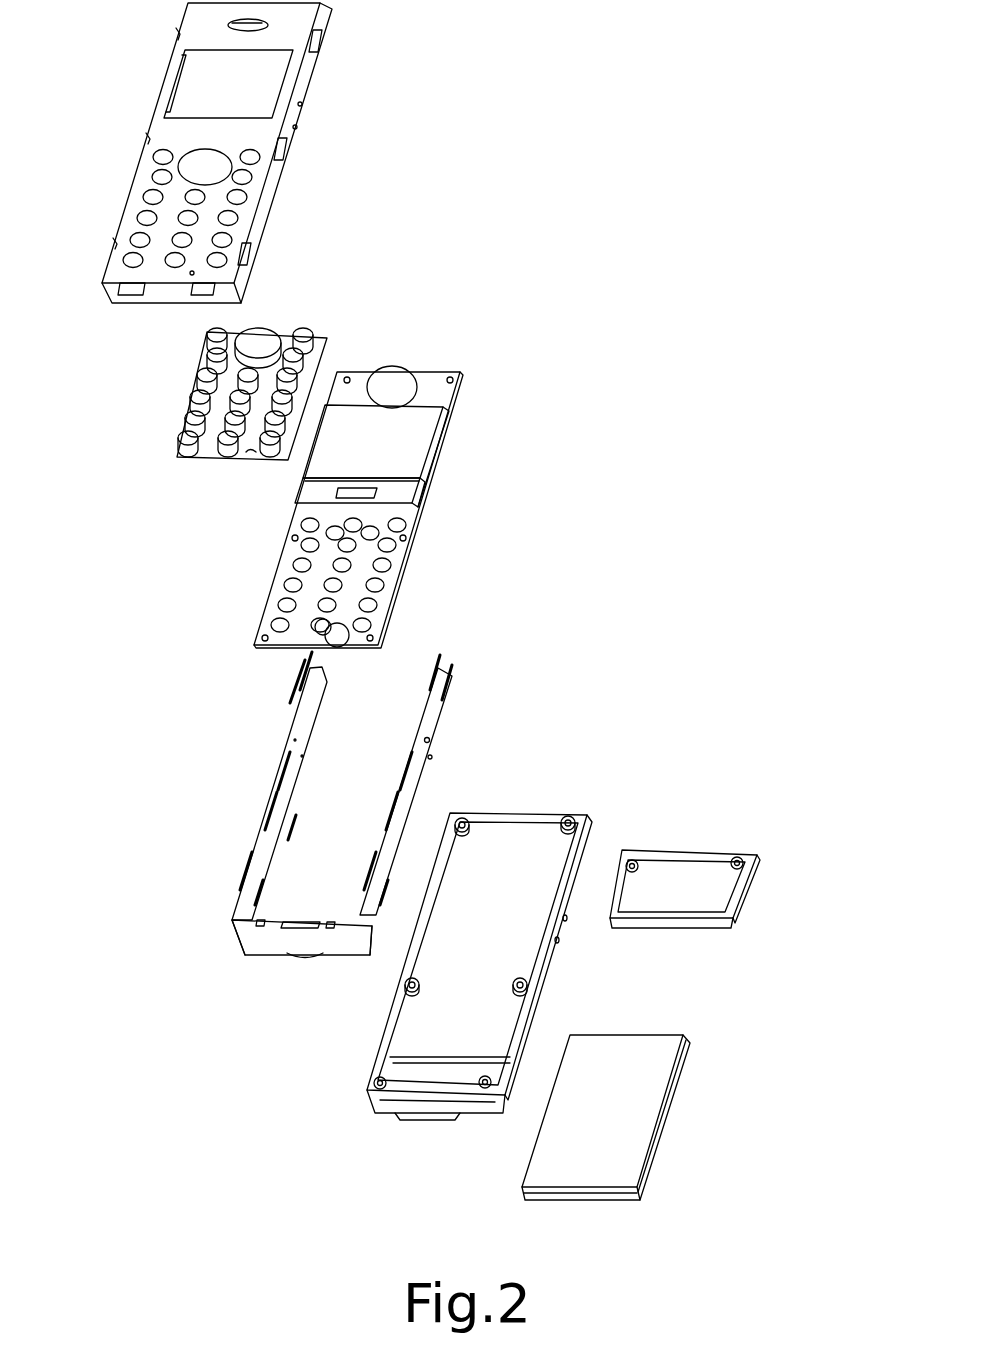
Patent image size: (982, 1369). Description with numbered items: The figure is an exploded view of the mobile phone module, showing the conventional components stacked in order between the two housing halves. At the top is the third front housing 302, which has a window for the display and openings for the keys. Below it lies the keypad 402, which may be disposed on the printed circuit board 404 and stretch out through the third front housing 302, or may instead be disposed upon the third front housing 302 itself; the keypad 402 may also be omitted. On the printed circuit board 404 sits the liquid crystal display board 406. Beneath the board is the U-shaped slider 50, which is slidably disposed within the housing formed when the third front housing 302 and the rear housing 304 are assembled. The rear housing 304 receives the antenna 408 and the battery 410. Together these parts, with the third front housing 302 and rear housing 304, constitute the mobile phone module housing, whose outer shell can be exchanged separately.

The third front housing 302 is at (270, 211).
The keypad 402 is at (330, 343).
The printed circuit board 404 is at (393, 596).
The liquid crystal display board 406 is at (417, 451).
The U-shaped slider 50 is at (400, 814).
The rear housing 304 is at (537, 1007).
The antenna 408 is at (732, 900).
The battery 410 is at (645, 1175).